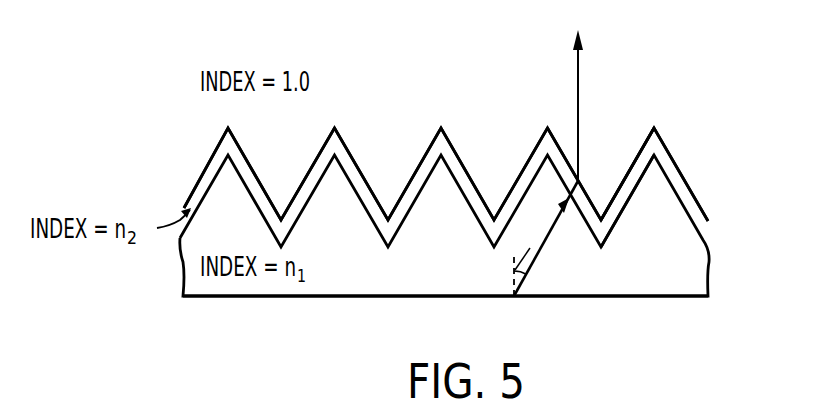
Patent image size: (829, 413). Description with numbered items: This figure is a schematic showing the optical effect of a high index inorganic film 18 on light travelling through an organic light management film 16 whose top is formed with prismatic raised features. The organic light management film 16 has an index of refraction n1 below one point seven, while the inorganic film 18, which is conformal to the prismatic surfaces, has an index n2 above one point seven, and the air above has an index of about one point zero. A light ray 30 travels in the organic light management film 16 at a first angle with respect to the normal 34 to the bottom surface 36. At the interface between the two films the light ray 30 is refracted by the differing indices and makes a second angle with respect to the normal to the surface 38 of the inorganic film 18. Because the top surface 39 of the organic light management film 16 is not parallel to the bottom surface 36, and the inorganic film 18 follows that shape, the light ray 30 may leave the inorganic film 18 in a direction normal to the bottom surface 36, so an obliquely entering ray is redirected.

The organic light management film 16 is at (702, 272).
The inorganic film 18 is at (692, 194).
The light ray 30 is at (538, 252).
The normal 34 is at (511, 279).
The bottom surface 36 is at (600, 297).
The surface of the inorganic film 38 is at (635, 190).
The top surface 39 is at (617, 221).